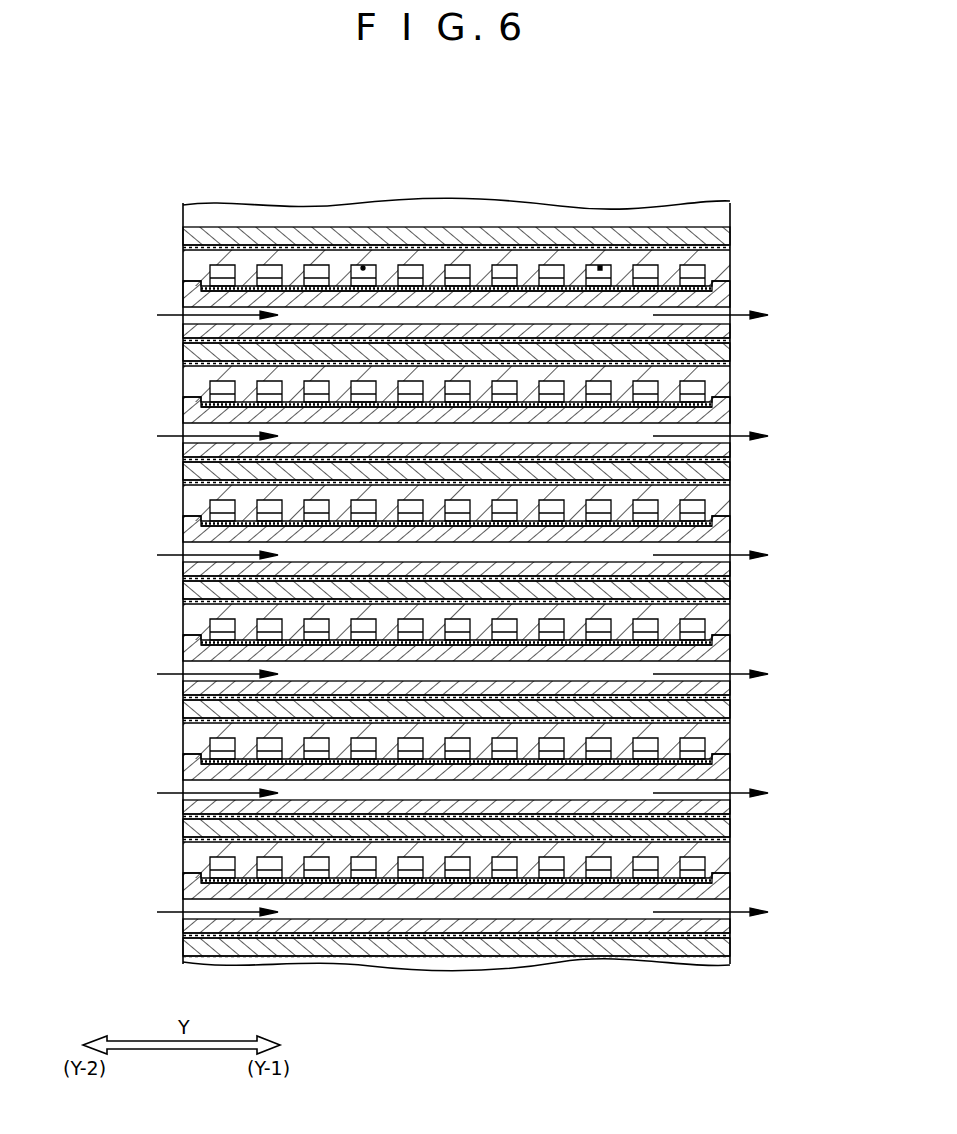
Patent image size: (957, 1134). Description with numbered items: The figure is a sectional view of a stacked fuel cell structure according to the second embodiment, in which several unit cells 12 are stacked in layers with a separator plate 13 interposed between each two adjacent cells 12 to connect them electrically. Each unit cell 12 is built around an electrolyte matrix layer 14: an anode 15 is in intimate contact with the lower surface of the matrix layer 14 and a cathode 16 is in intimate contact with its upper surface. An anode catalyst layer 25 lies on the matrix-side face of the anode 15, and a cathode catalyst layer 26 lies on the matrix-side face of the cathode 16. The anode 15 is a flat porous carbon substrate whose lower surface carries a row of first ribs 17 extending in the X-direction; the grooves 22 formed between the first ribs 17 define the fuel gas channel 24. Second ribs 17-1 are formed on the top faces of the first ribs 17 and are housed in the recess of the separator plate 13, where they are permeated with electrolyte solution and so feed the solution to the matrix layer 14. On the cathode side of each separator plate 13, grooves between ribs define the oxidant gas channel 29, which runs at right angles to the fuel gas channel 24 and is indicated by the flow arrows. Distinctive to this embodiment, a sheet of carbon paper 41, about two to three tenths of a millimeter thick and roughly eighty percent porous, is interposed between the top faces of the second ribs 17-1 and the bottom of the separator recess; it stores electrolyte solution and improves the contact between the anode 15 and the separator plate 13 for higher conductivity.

The unit cell 12 is at (180, 565).
The separator plate 13 is at (718, 651).
The electrolyte matrix layer 14 is at (730, 591).
The anode 15 is at (728, 620).
The cathode 16 is at (730, 566).
The first ribs 17 is at (206, 276).
The second ribs 17-1 is at (388, 282).
The grooves 22 is at (601, 266).
The fuel gas channel 24 is at (363, 266).
The anode catalyst layer 25 is at (730, 604).
The cathode catalyst layer 26 is at (730, 578).
The oxidant gas channel 29 is at (190, 433).
The carbon paper 41 is at (569, 287).